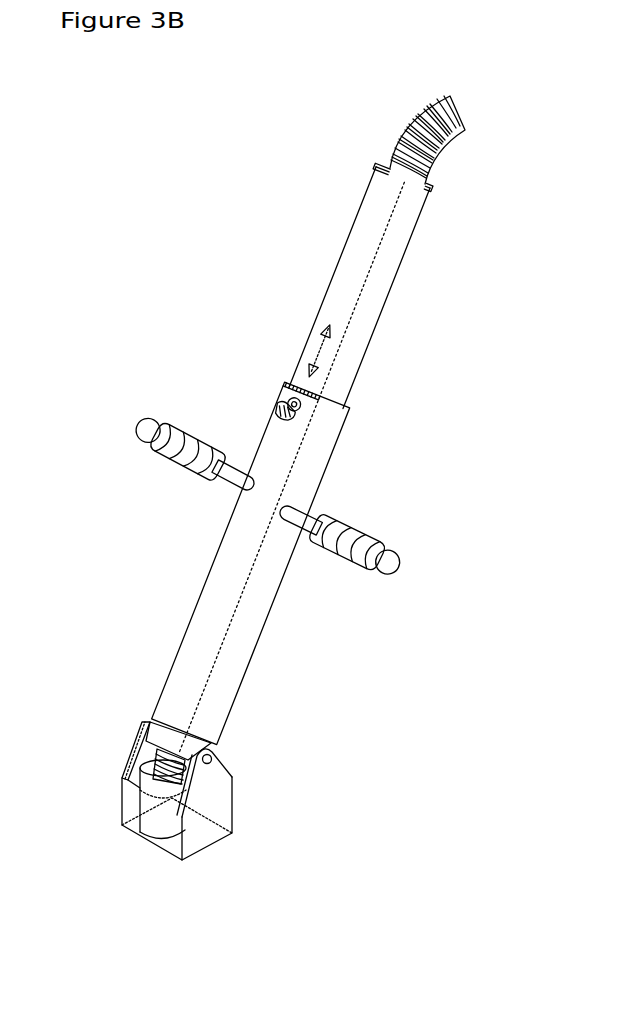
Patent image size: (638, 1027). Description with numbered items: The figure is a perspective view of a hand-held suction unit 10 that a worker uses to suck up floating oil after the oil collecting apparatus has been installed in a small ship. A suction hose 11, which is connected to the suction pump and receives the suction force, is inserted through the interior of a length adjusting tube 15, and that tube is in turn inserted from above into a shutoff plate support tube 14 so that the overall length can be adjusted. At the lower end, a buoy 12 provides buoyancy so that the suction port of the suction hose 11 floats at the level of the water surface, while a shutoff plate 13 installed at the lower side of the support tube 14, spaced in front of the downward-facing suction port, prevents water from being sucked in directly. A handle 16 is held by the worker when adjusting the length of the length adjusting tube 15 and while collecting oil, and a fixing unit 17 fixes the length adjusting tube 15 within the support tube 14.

The suction unit 10 is at (247, 745).
The suction hose 11 is at (422, 148).
The buoy 12 is at (140, 800).
The shutoff plate 13 is at (205, 824).
The shutoff plate support tube 14 is at (268, 608).
The length adjusting tube 15 is at (396, 284).
The handle 16 is at (373, 540).
The locking pin 17 is at (276, 398).